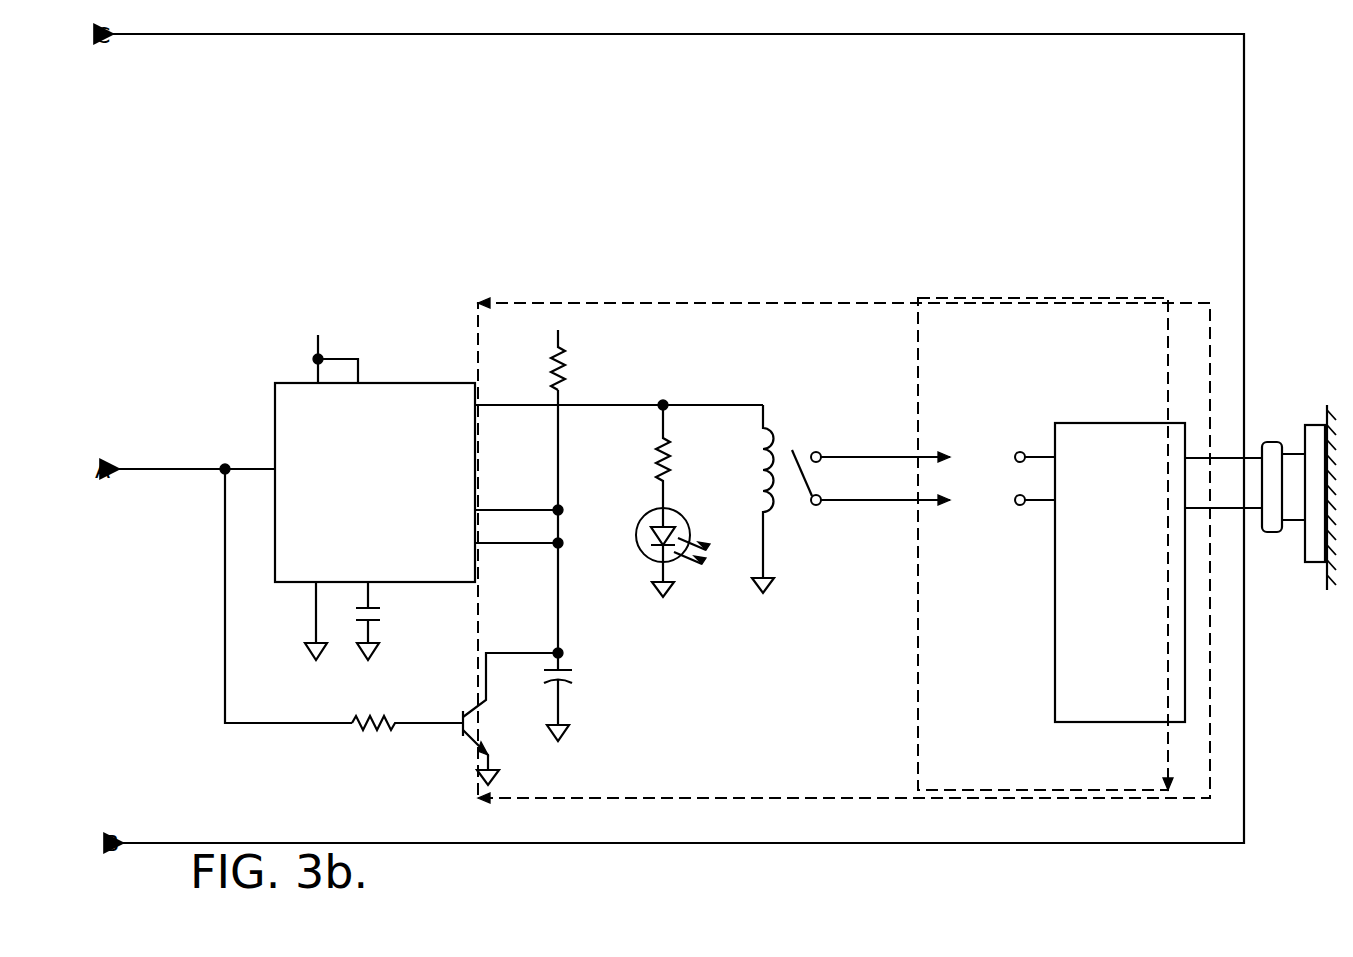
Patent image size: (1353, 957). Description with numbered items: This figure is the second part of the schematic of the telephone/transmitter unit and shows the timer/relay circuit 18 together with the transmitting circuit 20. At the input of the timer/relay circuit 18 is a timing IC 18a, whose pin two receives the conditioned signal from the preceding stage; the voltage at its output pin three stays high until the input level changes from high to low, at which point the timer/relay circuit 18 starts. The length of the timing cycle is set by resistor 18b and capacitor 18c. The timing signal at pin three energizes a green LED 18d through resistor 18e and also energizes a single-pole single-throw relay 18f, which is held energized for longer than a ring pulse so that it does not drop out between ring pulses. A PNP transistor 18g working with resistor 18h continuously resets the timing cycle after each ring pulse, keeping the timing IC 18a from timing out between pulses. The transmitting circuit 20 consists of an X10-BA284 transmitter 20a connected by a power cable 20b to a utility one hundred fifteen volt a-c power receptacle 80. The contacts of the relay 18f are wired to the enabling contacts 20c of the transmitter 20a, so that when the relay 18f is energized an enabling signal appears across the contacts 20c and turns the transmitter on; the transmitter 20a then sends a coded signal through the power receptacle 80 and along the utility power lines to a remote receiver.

The timer/relay circuit 18 is at (742, 566).
The timing IC 18a is at (432, 395).
The resistor 18b is at (566, 390).
The capacitor 18c is at (572, 679).
The green LED 18d is at (638, 556).
The resistor 18e is at (656, 456).
The single-pole single-throw relay 18f is at (798, 487).
The PNP transistor 18g is at (483, 703).
The resistor 18h is at (368, 731).
The transmitting circuit 20 is at (1062, 544).
The X10-BA284 transmitter 20a is at (1055, 690).
The power cable 20b is at (1228, 472).
The enabling contacts 20c is at (1014, 461).
The utility power receptacle 80 is at (1300, 563).